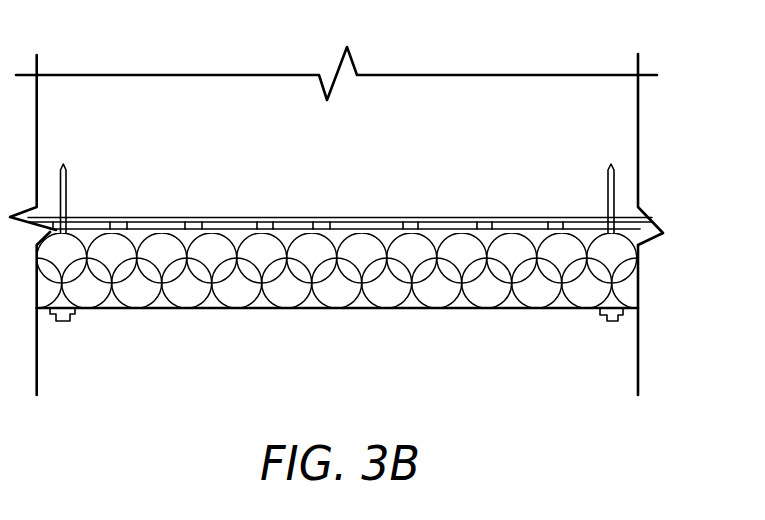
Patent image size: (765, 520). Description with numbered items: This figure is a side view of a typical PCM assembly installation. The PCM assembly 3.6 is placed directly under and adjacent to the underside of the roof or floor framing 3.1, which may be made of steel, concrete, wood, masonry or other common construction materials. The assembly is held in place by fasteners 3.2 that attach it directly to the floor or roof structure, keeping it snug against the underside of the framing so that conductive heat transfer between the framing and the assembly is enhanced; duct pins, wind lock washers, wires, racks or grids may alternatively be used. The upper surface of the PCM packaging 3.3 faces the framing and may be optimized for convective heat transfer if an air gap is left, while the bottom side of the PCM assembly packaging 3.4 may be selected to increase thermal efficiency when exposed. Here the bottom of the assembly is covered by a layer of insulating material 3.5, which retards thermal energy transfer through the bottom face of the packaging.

The roof or floor framing 3.1 is at (574, 150).
The fasteners 3.2 is at (612, 325).
The upper surface of PCM packaging 3.3 is at (280, 201).
The bottom side of PCM assembly packaging 3.4 is at (538, 231).
The layer of insulating material 3.5 is at (220, 266).
The PCM assembly 3.6 is at (135, 229).